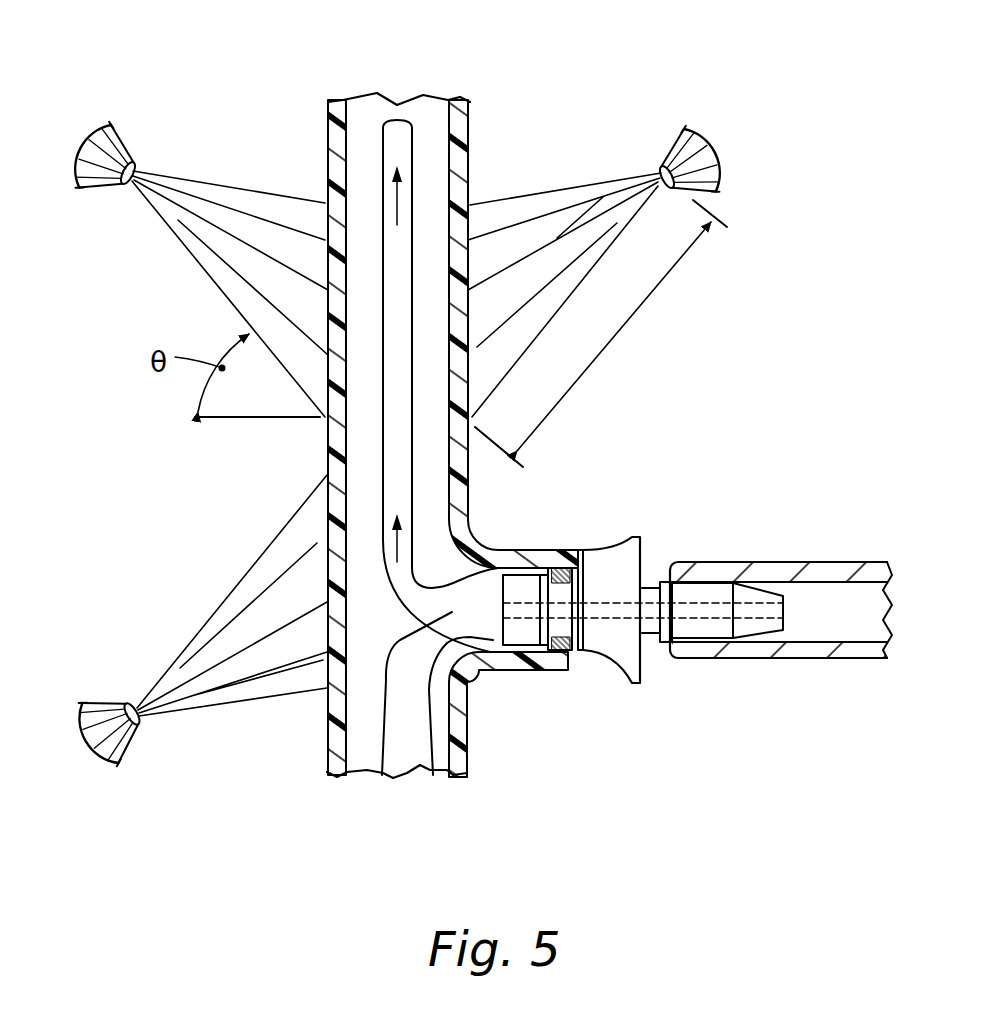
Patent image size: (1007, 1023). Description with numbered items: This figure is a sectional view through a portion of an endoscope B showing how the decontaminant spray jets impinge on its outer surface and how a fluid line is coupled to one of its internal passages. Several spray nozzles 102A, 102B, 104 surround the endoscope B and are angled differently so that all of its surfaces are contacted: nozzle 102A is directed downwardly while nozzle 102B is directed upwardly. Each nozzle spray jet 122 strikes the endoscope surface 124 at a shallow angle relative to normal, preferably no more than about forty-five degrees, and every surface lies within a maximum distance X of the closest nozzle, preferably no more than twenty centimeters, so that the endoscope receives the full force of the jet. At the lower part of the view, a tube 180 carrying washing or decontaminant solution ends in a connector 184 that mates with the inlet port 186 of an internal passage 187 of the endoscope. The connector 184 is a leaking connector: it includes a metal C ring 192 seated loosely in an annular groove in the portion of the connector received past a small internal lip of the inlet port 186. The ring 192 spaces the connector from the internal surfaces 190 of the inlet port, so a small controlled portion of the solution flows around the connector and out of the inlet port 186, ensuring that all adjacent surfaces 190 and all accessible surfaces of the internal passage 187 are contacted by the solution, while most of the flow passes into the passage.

The spray nozzle 102A is at (93, 132).
The spray nozzle 102B is at (104, 703).
The spray nozzle 104 is at (721, 163).
The nozzle spray jet 122 is at (203, 285).
The endoscope surface 124 is at (325, 727).
The tube 180 is at (848, 563).
The connector 184 is at (712, 596).
The inlet port 186 is at (535, 671).
The internal passage 187 is at (382, 777).
The internal surfaces of the inlet port 190 is at (433, 770).
The metal C ring 192 is at (568, 567).
The endoscope B is at (393, 74).
The maximum distance X is at (613, 337).